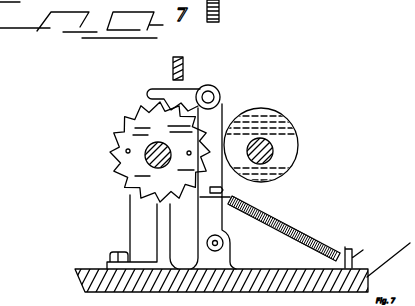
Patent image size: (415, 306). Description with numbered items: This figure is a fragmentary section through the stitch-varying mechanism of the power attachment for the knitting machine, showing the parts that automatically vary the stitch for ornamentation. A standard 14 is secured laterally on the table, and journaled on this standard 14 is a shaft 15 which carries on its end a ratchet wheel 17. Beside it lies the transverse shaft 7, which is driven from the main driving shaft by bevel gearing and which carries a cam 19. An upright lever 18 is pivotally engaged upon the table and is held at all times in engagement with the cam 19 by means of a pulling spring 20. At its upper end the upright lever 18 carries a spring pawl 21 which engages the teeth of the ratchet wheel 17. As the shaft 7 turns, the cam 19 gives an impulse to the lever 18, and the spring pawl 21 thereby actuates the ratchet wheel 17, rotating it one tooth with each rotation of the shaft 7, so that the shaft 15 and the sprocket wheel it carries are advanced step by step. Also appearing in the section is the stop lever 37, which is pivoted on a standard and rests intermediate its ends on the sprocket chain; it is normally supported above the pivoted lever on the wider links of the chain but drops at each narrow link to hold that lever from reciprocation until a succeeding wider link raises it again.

The shaft 7 is at (273, 149).
The standard 14 is at (153, 222).
The shaft 15 is at (112, 150).
The ratchet wheel 17 is at (130, 128).
The upright lever 18 is at (224, 112).
The cam 19 is at (287, 130).
The pulling spring 20 is at (314, 233).
The spring pawl 21 is at (211, 84).
The stop lever 37 is at (183, 61).